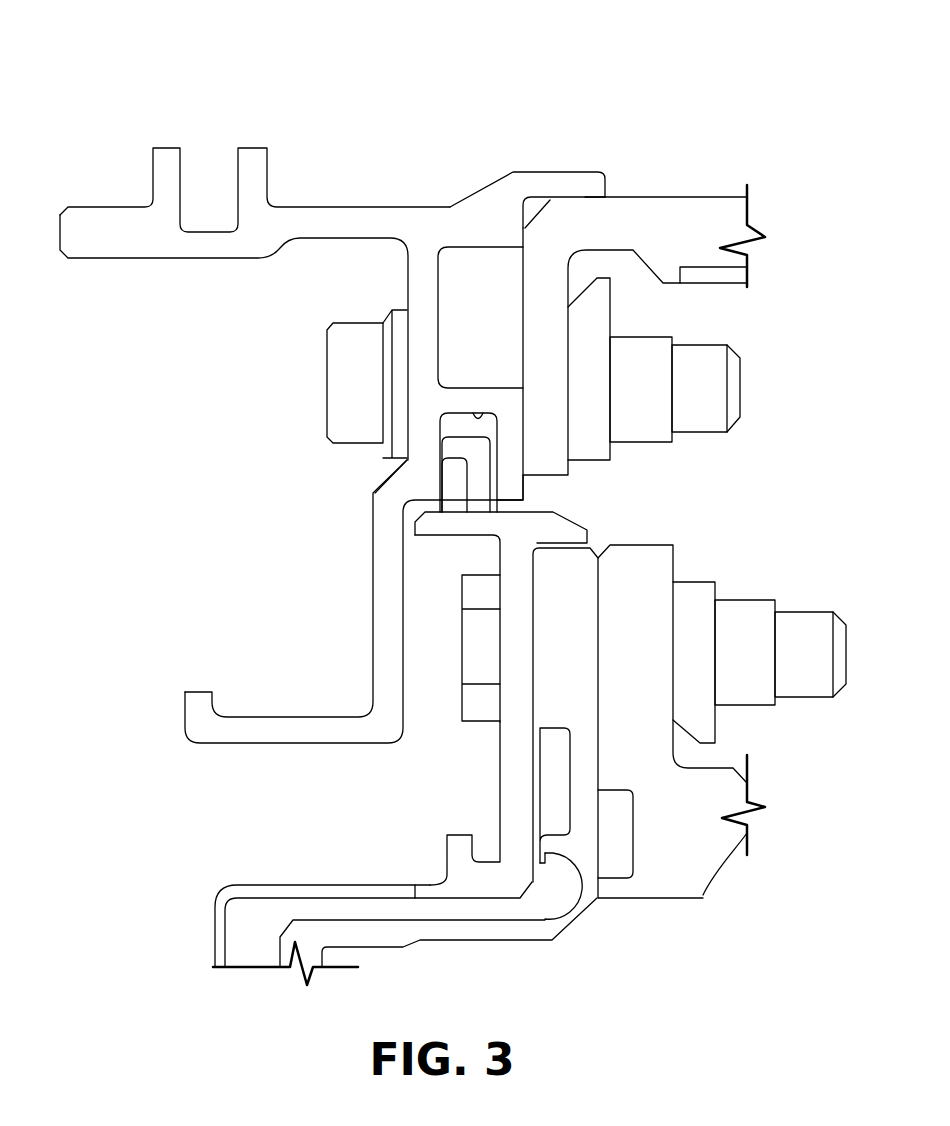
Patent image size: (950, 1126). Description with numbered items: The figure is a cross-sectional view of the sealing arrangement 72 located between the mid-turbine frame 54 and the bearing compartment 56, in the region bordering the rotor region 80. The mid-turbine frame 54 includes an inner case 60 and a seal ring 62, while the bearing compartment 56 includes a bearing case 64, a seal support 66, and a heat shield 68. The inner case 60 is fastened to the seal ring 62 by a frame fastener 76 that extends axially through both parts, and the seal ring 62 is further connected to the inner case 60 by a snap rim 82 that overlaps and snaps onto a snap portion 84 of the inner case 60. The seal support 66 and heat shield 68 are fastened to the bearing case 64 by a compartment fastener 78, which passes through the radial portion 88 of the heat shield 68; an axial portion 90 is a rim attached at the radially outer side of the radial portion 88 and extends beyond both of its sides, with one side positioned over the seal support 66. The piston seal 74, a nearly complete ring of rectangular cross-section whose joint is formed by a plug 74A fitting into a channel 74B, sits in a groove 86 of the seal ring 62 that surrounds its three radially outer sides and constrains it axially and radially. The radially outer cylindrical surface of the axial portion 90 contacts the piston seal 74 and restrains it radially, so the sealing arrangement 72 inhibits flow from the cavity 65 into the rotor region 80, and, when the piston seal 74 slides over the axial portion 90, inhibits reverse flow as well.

The mid-turbine frame 54 is at (760, 216).
The bearing compartment 56 is at (730, 748).
The inner case 60 is at (686, 184).
The seal ring 62 is at (343, 192).
The bearing case 64 is at (720, 873).
The cavity 65 is at (640, 698).
The seal support 66 is at (473, 947).
The heat shield 68 is at (486, 807).
The sealing arrangement 72 is at (692, 97).
The piston seal 74 is at (463, 437).
The plug 74A is at (460, 480).
The channel 74B is at (482, 498).
The frame fastener 76 is at (697, 340).
The compartment fastener 78 is at (845, 657).
The rotor region 80 is at (312, 601).
The snap rim 82 is at (566, 170).
The snap portion 84 is at (583, 200).
The groove 86 is at (478, 417).
The radial portion 88 is at (500, 748).
The axial portion 90 is at (562, 528).